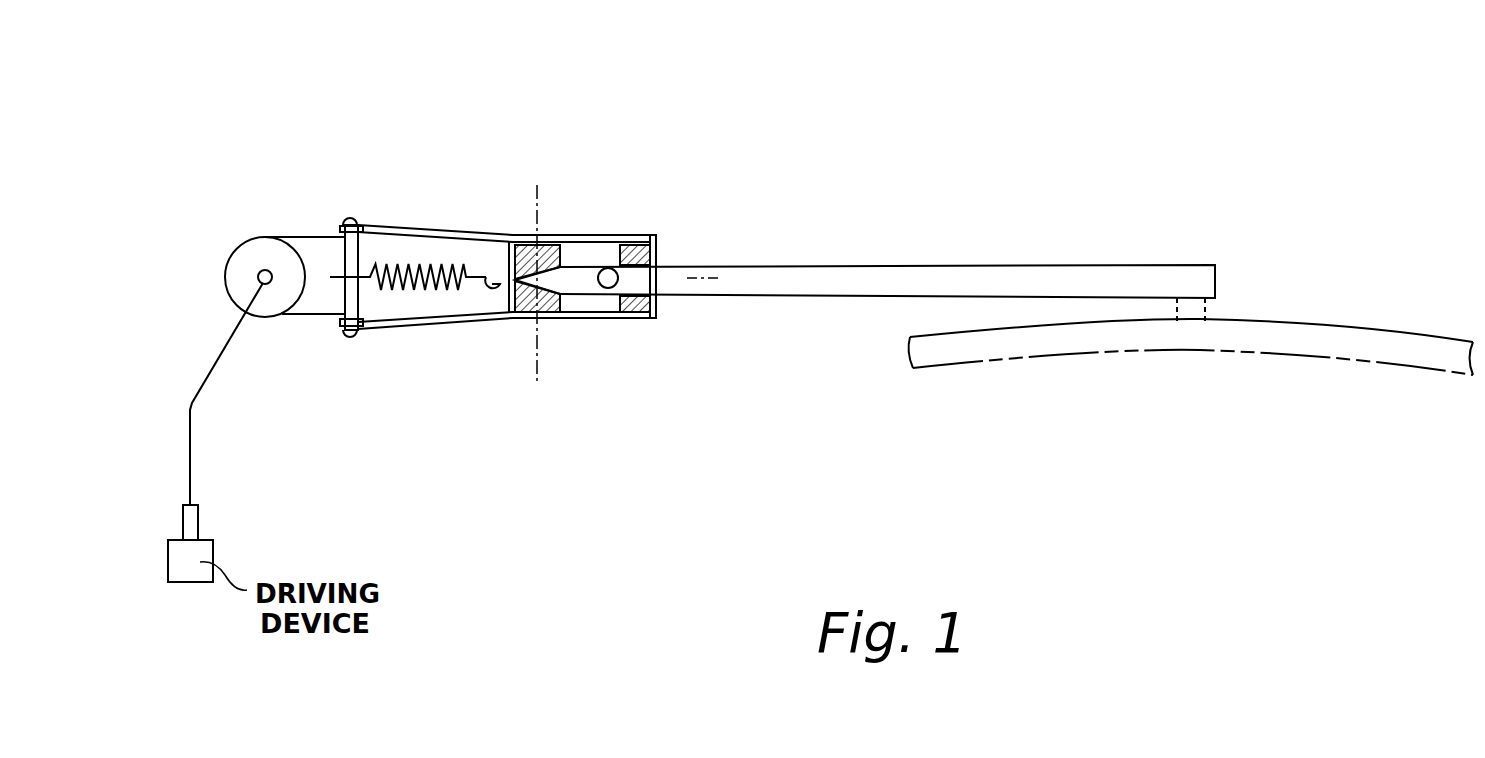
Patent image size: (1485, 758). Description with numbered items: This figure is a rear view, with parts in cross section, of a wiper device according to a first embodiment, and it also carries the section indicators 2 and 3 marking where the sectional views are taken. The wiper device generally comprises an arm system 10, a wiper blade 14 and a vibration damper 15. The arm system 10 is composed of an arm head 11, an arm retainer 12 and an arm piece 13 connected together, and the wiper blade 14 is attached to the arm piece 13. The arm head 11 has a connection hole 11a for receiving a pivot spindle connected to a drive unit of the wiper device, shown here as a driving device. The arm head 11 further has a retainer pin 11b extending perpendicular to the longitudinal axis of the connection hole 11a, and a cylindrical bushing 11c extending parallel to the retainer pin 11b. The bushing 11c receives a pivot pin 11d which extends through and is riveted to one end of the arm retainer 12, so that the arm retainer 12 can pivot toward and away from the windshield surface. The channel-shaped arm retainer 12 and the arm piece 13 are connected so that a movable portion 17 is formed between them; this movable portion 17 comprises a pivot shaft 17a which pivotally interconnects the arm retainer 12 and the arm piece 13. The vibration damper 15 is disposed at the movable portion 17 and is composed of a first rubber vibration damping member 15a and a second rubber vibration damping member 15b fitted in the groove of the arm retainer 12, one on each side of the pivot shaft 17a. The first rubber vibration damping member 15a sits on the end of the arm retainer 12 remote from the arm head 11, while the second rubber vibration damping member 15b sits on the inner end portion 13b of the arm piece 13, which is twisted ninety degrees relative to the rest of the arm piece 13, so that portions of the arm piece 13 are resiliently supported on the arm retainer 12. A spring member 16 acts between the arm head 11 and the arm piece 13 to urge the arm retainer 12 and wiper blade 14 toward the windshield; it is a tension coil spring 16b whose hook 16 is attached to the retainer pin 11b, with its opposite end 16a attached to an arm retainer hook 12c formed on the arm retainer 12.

The arm system 10 is at (834, 94).
The arm head 11 is at (265, 237).
The connection hole 11a is at (258, 275).
The retainer pin 11b is at (350, 288).
The bushing 11c is at (343, 321).
The pivot pin 11d is at (350, 339).
The arm retainer 12 is at (373, 224).
The arm retainer hook 12c is at (509, 268).
The arm piece 13 is at (865, 210).
The inner end portion of the arm piece 13b is at (566, 266).
The wiper blade 14 is at (1277, 342).
The vibration damper 15 is at (619, 357).
The first rubber vibration damping member 15a is at (667, 328).
The second rubber vibration damping member 15b is at (553, 313).
The spring member 16 is at (402, 385).
The coil spring 16a is at (371, 299).
The tension coil spring 16b is at (408, 298).
The movable portion 17 is at (684, 232).
The pivot shaft 17a is at (609, 268).
The section line 2- 2 is at (530, 193).
The section line 3- 3 is at (507, 290).